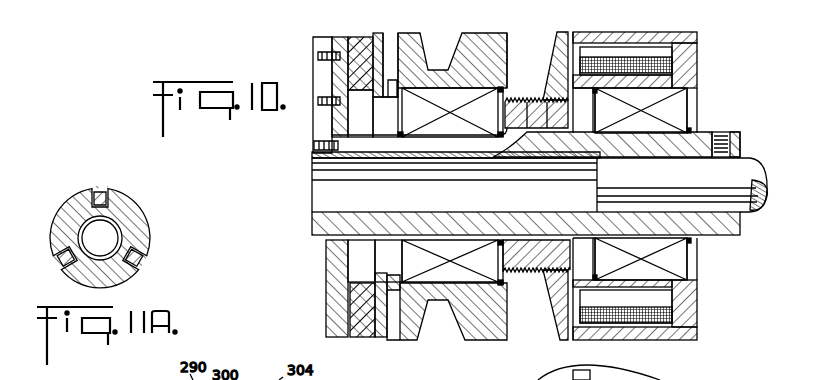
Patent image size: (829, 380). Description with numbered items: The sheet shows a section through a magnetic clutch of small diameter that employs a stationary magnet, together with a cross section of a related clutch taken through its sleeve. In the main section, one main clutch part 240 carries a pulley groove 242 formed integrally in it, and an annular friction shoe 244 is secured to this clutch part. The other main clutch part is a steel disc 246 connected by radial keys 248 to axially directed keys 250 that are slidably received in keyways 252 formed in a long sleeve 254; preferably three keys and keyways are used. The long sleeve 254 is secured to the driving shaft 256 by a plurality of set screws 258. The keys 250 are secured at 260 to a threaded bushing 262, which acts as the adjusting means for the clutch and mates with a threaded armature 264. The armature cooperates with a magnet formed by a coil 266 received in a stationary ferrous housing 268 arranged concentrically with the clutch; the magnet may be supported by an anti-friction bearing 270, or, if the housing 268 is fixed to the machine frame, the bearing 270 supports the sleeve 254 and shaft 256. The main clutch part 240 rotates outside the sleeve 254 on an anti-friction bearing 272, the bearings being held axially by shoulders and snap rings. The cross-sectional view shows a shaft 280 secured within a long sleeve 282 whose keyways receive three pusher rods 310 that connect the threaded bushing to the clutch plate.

In FIG. 10, the main clutch part 240 is at (403, 33).
In FIG. 10, the pulley groove 242 is at (457, 33).
In FIG. 10, the annular friction shoe 244 is at (353, 36).
In FIG. 10, the steel disc 246 is at (340, 36).
In FIG. 10, the radial keys 248 is at (316, 100).
In FIG. 10, the axially directed keys 250 is at (357, 143).
In FIG. 10, the keyways 252 is at (537, 147).
In FIG. 10, the long sleeve 254 is at (735, 235).
In FIG. 10, the shaft 256 is at (748, 170).
In FIG. 10, the set screws 258 is at (723, 133).
In FIG. 10, the securing point of keys to bushing 260 is at (513, 97).
In FIG. 10, the threaded bushing 262 is at (556, 34).
In FIG. 10, the threaded armature 264 is at (560, 32).
In FIG. 10, the coil 266 is at (665, 52).
In FIG. 10, the stationary ferrous housing 268 is at (668, 33).
In FIG. 10, the anti-friction bearing 270 is at (680, 102).
In FIG. 10, the anti-friction bearing 272 is at (413, 260).
In FIG. 11A, the shaft 280 is at (112, 236).
In FIG. 11A, the long sleeve 282 is at (143, 216).
In FIG. 11A, the pusher rods 310 is at (102, 193).